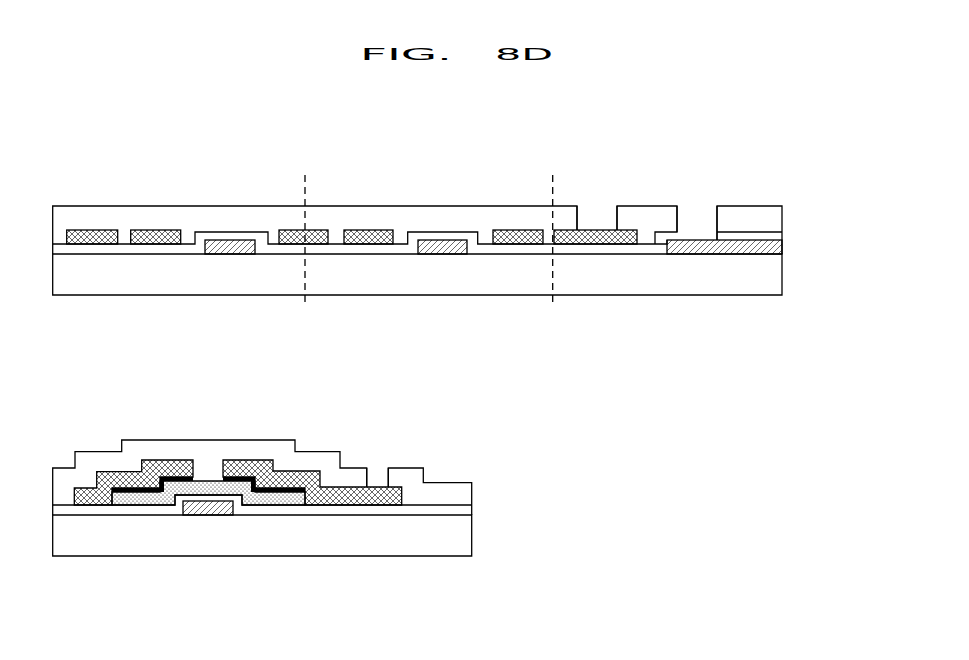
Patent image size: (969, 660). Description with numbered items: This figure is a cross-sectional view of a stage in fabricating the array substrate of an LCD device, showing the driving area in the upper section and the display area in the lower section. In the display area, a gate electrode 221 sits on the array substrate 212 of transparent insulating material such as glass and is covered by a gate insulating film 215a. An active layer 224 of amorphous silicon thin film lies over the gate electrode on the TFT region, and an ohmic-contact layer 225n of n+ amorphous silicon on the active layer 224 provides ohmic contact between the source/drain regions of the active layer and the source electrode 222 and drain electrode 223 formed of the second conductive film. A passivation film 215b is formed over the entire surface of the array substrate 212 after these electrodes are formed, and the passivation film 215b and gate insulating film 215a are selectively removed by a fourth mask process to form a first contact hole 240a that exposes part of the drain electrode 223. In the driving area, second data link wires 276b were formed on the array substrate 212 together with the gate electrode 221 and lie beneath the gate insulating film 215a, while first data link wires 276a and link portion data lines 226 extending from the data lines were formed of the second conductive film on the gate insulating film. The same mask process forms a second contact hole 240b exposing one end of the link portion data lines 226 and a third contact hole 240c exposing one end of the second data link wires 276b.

The array substrate 212 is at (782, 275).
The gate insulating film 215a is at (782, 236).
The passivation film 215b is at (782, 216).
The gate electrode 221 is at (208, 513).
The source electrode 222 is at (173, 462).
The drain electrode 223 is at (245, 462).
The active layer 224 is at (145, 500).
The ohmic-contact layer 225n is at (278, 493).
The link portion data lines 226 is at (593, 241).
The first contact hole 240a is at (378, 481).
The second contact hole 240b is at (598, 218).
The third contact hole 240c is at (696, 212).
The first data link wires 276a is at (89, 237).
The second data link wires 276b is at (227, 247).